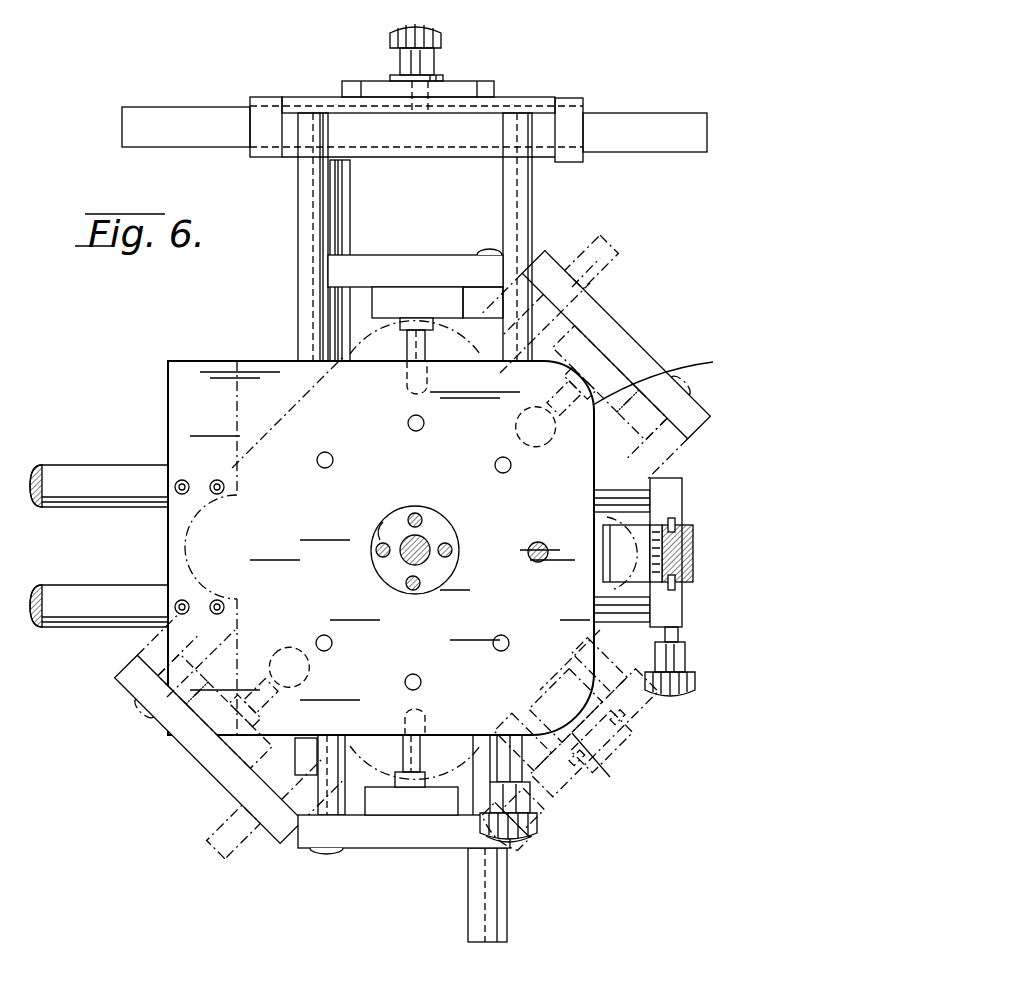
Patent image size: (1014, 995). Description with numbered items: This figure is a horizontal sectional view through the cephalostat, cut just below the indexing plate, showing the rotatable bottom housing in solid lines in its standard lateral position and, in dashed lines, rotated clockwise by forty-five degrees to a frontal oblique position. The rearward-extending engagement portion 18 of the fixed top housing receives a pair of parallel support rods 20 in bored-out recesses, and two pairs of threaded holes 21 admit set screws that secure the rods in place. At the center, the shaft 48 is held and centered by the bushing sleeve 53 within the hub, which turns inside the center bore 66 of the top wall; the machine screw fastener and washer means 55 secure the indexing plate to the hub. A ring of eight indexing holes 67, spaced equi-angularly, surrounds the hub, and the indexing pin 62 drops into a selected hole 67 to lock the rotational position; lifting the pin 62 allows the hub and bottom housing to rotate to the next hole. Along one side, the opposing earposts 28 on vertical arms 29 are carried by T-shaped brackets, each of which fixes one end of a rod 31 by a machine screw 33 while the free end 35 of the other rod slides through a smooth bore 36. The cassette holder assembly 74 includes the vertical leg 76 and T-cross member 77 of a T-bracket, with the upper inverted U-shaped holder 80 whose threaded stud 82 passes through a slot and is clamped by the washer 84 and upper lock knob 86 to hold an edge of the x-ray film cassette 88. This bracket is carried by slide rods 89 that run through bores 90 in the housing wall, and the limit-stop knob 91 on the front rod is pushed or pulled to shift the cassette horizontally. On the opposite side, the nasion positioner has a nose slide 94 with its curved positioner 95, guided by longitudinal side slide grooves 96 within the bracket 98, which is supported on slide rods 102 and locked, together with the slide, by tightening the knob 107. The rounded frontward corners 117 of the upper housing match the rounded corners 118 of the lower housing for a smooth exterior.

The rearward-extending engagement portion 18 is at (178, 420).
The support rods 20 is at (85, 478).
The threaded holes 21 is at (215, 480).
The earposts 28 is at (407, 345).
The vertical arms 29 is at (405, 293).
The rods 31 is at (332, 300).
The machine screw 33 is at (488, 250).
The free end 35 is at (348, 192).
The smooth bores 36 is at (590, 290).
The shaft 48 is at (428, 558).
The bushing sleeve 53 is at (413, 535).
The machine screw fastener and washer means 55 is at (450, 545).
The indexing pin 62 is at (537, 563).
The center bore 66 is at (380, 525).
The indexing holes 67 is at (332, 452).
The cassette holder assembly 74 is at (685, 181).
The vertical leg 76 is at (472, 90).
The T-cross member 77 is at (308, 100).
The upper inverted U-shaped holder 80 is at (572, 108).
The threaded stud 82 is at (410, 104).
The washer 84 is at (440, 80).
The upper lock knob 86 is at (391, 42).
The x-ray film cassette 88 is at (700, 128).
The slide rods 89 is at (303, 190).
The bores 90 is at (302, 356).
The limit-stop knob 91 is at (532, 830).
The nose slide 94 is at (695, 540).
The positioner 95 is at (627, 553).
The side slide grooves 96 is at (676, 522).
The bracket 98 is at (684, 488).
The slide rods 102 is at (606, 500).
The knob 107 is at (692, 684).
The rounded frontward corners 117 is at (657, 576).
The rounded corners 118 is at (236, 375).